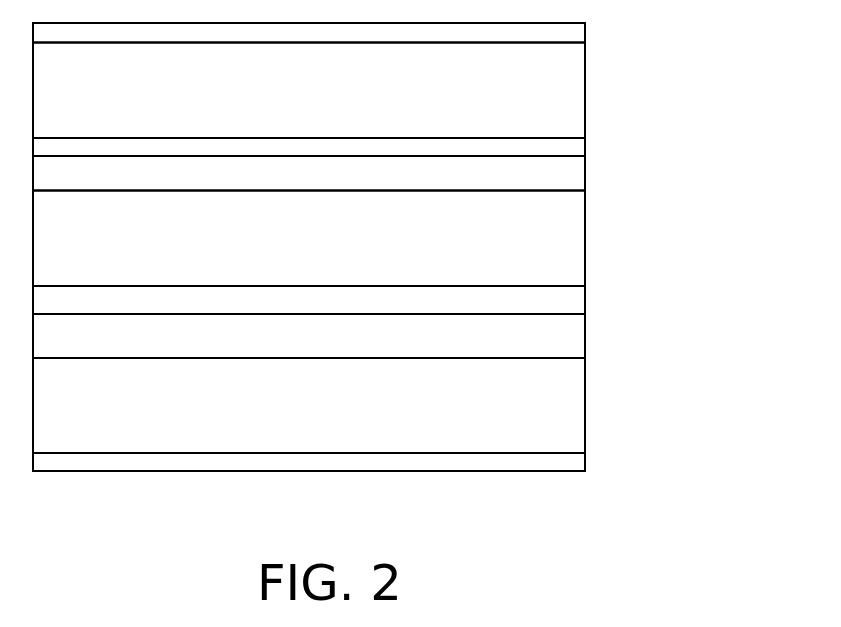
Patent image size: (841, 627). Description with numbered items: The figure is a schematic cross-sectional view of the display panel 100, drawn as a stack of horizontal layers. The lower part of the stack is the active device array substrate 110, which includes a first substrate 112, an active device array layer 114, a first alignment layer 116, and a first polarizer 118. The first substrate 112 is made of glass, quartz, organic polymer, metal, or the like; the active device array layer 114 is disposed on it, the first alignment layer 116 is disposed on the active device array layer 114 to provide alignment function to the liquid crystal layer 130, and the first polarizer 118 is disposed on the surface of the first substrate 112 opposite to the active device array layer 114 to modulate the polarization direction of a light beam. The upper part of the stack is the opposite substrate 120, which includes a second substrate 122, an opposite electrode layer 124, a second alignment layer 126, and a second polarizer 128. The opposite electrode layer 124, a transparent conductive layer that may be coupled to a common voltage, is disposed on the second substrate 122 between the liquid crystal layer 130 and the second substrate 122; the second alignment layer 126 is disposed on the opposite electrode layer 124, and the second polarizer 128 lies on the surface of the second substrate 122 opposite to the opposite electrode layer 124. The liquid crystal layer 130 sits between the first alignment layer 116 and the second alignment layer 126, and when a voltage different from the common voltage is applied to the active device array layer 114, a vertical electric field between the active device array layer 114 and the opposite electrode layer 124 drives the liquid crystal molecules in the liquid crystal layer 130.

The display panel 100 is at (386, 272).
The active device array substrate 110 is at (386, 376).
The first substrate 112 is at (577, 411).
The active device array layer 114 is at (577, 340).
The first alignment layer 116 is at (577, 302).
The first polarizer 118 is at (354, 457).
The opposite substrate 120 is at (386, 101).
The second substrate 122 is at (577, 95).
The opposite electrode layer 124 is at (577, 148).
The second alignment layer 126 is at (354, 176).
The second polarizer 128 is at (577, 35).
The liquid crystal layer 130 is at (577, 242).